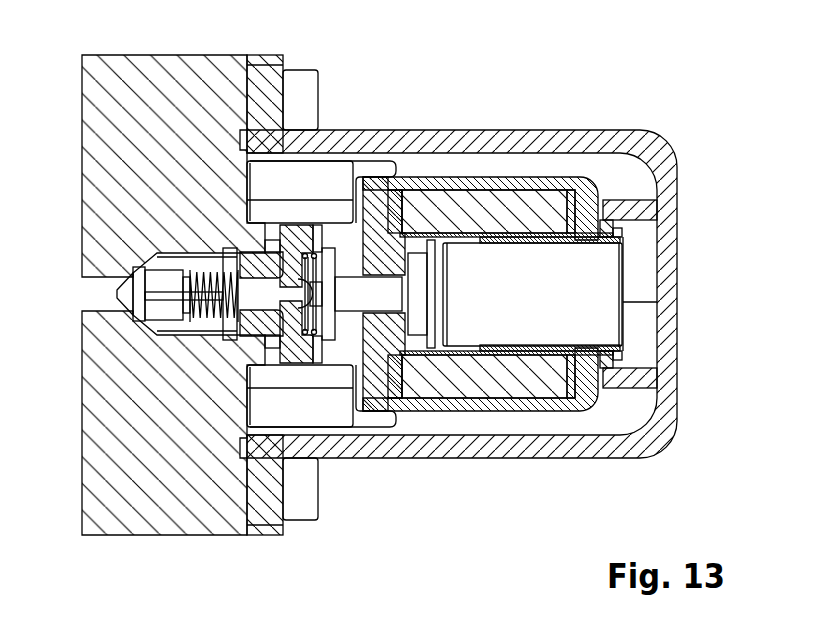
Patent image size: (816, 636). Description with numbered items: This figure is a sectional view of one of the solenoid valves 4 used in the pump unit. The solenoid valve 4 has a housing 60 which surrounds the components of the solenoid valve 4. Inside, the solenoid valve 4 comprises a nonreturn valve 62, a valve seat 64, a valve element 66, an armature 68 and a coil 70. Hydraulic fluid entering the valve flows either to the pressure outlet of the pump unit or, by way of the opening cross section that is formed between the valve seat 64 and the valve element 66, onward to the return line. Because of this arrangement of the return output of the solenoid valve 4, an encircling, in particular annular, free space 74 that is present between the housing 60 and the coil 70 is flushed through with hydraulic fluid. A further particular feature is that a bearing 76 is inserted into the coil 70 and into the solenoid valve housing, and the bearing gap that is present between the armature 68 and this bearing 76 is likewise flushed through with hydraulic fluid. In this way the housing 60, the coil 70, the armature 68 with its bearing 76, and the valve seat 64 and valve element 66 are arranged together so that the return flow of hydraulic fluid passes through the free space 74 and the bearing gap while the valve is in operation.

The solenoid valve 4 is at (646, 85).
The housing 60 is at (585, 142).
The nonreturn valve 62 is at (172, 327).
The valve seat 64 is at (291, 325).
The valve element 66 is at (326, 248).
The armature 68 is at (608, 278).
The coil 70 is at (475, 178).
The free space 74 is at (522, 167).
The bearing 76 is at (622, 237).